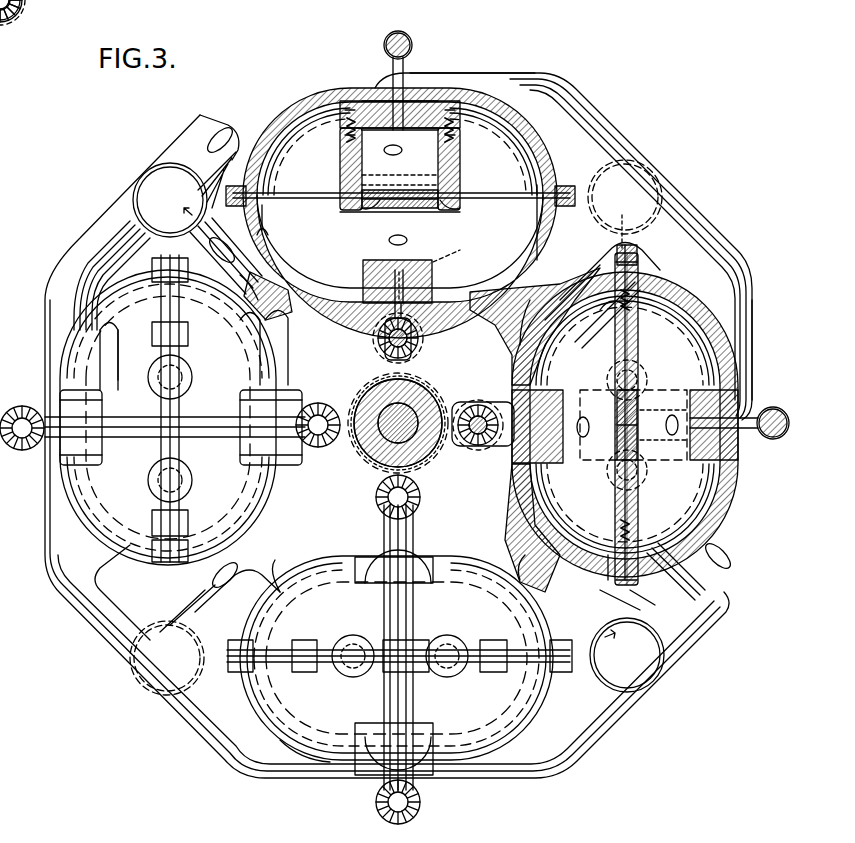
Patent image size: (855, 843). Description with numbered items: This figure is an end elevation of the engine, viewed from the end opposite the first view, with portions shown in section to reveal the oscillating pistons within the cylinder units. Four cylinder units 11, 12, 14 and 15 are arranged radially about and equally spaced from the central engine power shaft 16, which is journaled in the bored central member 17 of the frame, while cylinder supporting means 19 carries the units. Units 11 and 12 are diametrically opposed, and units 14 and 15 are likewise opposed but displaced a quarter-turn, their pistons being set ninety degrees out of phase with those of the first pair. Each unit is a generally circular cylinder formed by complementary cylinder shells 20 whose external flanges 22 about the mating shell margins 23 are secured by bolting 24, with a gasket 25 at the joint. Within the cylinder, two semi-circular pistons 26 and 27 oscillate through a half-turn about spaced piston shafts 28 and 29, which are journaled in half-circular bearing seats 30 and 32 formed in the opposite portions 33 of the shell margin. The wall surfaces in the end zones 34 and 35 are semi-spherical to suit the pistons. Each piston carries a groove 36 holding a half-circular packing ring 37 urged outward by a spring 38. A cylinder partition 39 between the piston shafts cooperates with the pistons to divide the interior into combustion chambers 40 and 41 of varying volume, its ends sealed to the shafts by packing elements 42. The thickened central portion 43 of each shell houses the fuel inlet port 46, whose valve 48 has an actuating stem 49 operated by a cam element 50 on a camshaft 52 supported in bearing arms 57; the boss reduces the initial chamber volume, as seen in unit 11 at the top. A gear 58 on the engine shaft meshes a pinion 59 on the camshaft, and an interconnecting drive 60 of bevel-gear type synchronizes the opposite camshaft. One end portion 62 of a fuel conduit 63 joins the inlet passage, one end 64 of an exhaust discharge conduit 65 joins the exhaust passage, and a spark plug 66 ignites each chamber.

The cylinder unit 11 is at (275, 125).
The cylinder unit 12 is at (520, 724).
The cylinder unit 14 is at (712, 560).
The cylinder unit 15 is at (75, 520).
The engine power shaft 16 is at (372, 465).
The central member 17 is at (368, 393).
The cylinder supporting means 19 is at (530, 300).
The cylinder shell 20 is at (320, 96).
The external flange 22 is at (238, 192).
The shell margin 23 is at (275, 196).
The bolting 24 is at (190, 340).
The gasket 25 is at (282, 199).
The piston 26 is at (458, 157).
The piston 27 is at (342, 162).
The piston shaft 28 is at (455, 210).
The piston shaft 29 is at (350, 210).
The half-circular bearing seat 30 is at (150, 478).
The half-circular bearing seat 32 is at (152, 380).
The opposite portion of shell margin 33 is at (428, 640).
The end zone 34 is at (537, 186).
The end zone 35 is at (264, 220).
The groove 36 is at (457, 113).
The packing ring 37 is at (462, 97).
The spring 38 is at (455, 132).
The cylinder partition 39 is at (418, 190).
The combustion chamber 40 is at (400, 180).
The combustion chamber 41 is at (400, 210).
The packing element 42 is at (368, 208).
The central portion 43 is at (418, 130).
The fuel inlet port 46 is at (700, 388).
The valve 48 is at (375, 260).
The actuating stem 49 is at (366, 273).
The cam element 50 is at (410, 40).
The camshaft 52 is at (384, 42).
The bearing arm 57 is at (392, 72).
The gear 58 is at (442, 393).
The pinion 59 is at (322, 405).
The interconnecting drive 60 is at (33, 406).
The end portion of fuel conduit 62 is at (440, 73).
The fuel conduit 63 is at (585, 112).
The end of exhaust discharge conduit 64 is at (80, 468).
The exhaust discharge conduit 65 is at (112, 212).
The spark plug 66 is at (670, 422).